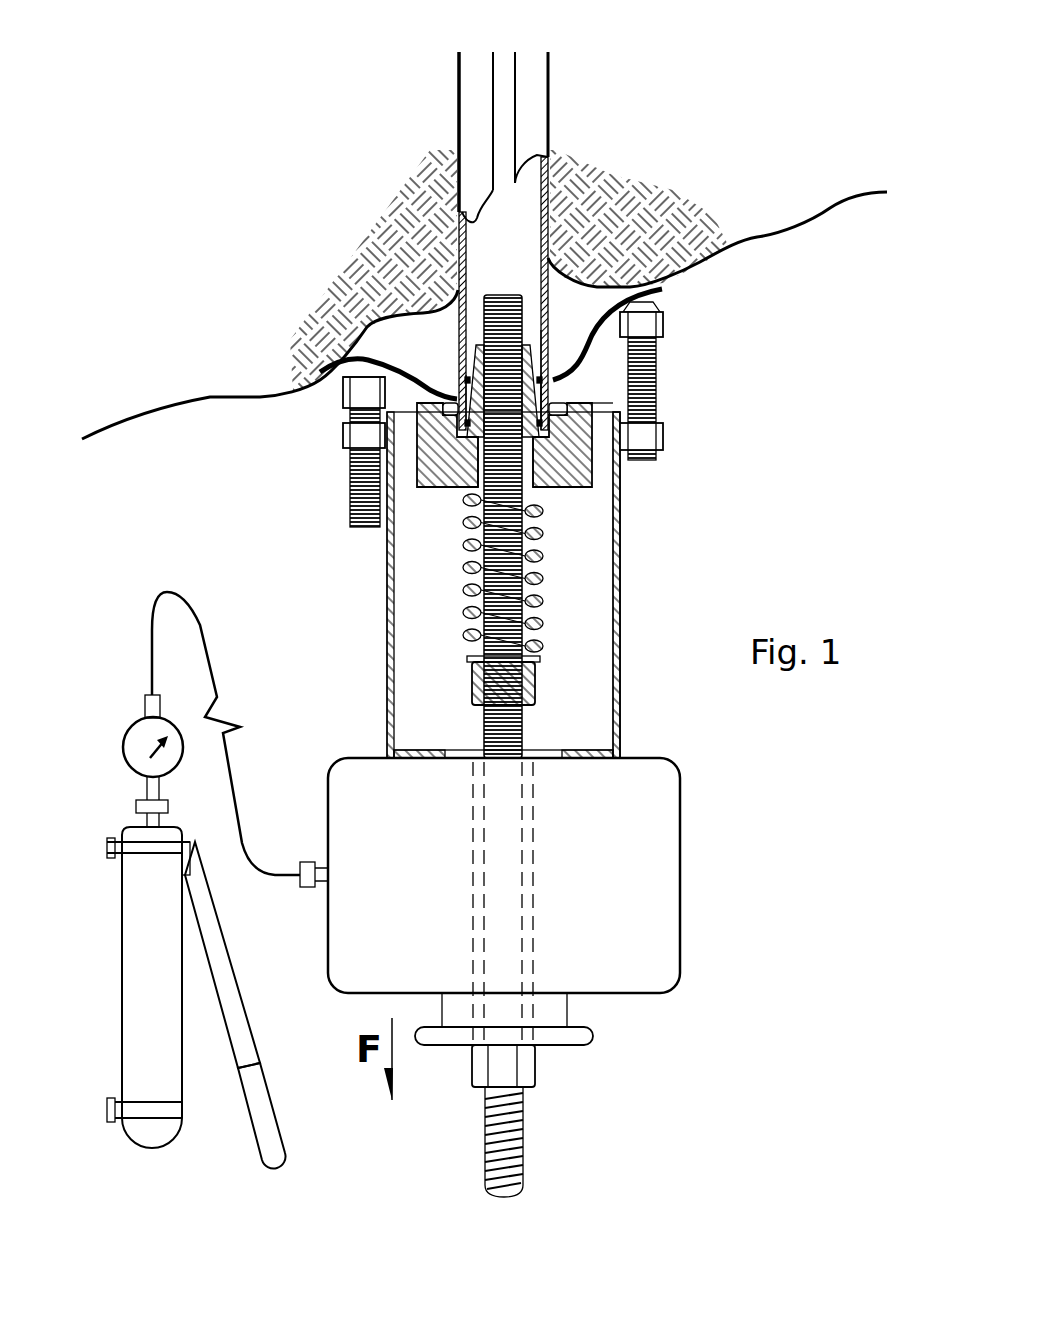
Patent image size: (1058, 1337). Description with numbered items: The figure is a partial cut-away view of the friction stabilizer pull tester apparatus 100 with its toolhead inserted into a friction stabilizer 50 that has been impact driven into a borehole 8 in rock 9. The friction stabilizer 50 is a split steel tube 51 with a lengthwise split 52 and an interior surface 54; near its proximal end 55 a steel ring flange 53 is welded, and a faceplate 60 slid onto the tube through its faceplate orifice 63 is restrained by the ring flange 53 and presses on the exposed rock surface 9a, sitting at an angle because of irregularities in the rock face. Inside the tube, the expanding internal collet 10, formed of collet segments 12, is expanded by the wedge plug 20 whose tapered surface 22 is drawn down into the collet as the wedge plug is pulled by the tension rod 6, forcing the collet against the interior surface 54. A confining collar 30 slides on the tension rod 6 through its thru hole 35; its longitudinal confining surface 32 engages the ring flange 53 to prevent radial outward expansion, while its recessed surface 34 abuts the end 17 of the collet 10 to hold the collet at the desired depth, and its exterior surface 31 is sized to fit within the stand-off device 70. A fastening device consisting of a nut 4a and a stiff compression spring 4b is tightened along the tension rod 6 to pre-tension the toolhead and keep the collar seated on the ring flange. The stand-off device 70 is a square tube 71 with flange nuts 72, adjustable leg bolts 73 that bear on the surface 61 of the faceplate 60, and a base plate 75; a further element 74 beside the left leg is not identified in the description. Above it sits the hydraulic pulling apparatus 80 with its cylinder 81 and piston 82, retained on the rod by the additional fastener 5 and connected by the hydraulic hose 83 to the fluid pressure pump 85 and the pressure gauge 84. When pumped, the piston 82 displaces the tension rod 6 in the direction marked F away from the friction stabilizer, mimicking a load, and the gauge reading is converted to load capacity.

The nut 4a is at (535, 697).
The stiff compression spring 4b is at (533, 615).
The additional fastener 5 is at (537, 1067).
The tension rod 6 is at (523, 1140).
The borehole 8 is at (458, 70).
The rock 9 is at (509, 271).
The exposed rock surface 9a is at (728, 245).
The internal collet 10 is at (462, 375).
The collet segments 12 is at (465, 392).
The end of collet 17 is at (458, 442).
The wedge plug 20 is at (552, 315).
The tapered surface 22 is at (478, 352).
The confining collar 30 is at (620, 557).
The exterior surface 31 is at (592, 470).
The longitudinal confining surface 32 is at (630, 398).
The recessed surface 34 is at (457, 488).
The thru hole 35 is at (440, 495).
The friction stabilizer 50 is at (556, 62).
The steel tube 51 is at (535, 85).
The lengthwise split 52 is at (517, 117).
The steel ring flange 53 is at (558, 398).
The interior surface 54 is at (547, 195).
The proximal end 55 is at (547, 493).
The faceplate 60 is at (665, 296).
The faceplate surface 61 is at (323, 377).
The faceplate orifice 63 is at (547, 343).
The stand-off device 70 is at (624, 516).
The square tube 71 is at (620, 593).
The flange nuts 72 is at (342, 435).
The adjustable legs 73 is at (352, 488).
The washer 74 is at (340, 405).
The base plate 75 is at (585, 760).
The pulling apparatus 80 is at (684, 841).
The cylinder 81 is at (680, 888).
The piston 82 is at (568, 1005).
The hydraulic hose 83 is at (257, 863).
The pressure gauge 84 is at (123, 740).
The fluid pressure pump 85 is at (122, 968).
The friction stabilizer pull tester apparatus 100 is at (727, 531).